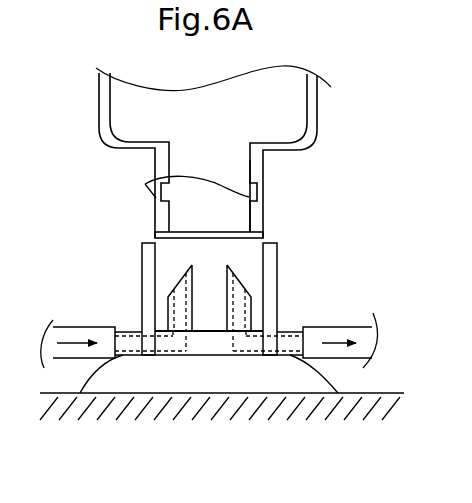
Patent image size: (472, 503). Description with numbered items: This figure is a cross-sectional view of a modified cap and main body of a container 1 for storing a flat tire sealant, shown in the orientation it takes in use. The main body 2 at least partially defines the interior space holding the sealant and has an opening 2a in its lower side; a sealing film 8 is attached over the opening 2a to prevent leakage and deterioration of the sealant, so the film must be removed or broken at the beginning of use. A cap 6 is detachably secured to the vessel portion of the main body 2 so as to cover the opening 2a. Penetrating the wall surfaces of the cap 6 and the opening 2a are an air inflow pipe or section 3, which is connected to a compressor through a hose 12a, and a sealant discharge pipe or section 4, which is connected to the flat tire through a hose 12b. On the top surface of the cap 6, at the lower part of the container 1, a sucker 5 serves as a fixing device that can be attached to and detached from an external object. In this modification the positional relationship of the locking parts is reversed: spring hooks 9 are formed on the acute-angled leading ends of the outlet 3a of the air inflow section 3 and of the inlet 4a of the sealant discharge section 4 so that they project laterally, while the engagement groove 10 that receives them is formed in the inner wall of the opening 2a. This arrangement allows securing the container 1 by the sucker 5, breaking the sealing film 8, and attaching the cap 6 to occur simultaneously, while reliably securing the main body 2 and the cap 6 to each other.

The container 1 is at (374, 215).
The main body 2 is at (318, 117).
The opening 2a is at (254, 215).
The air inflow pipe or section 3 is at (118, 358).
The outlet of the air inflow section 3a is at (173, 316).
The sealant discharge pipe or section 4 is at (293, 357).
The inlet of the sealant discharge section 4a is at (246, 312).
The sucker 5 is at (203, 373).
The cap 6 is at (139, 267).
The sealing film 8 is at (236, 238).
The spring hooks 9 is at (166, 297).
The engagement groove 10 is at (145, 184).
The hose 12a is at (76, 358).
The hose 12b is at (342, 358).